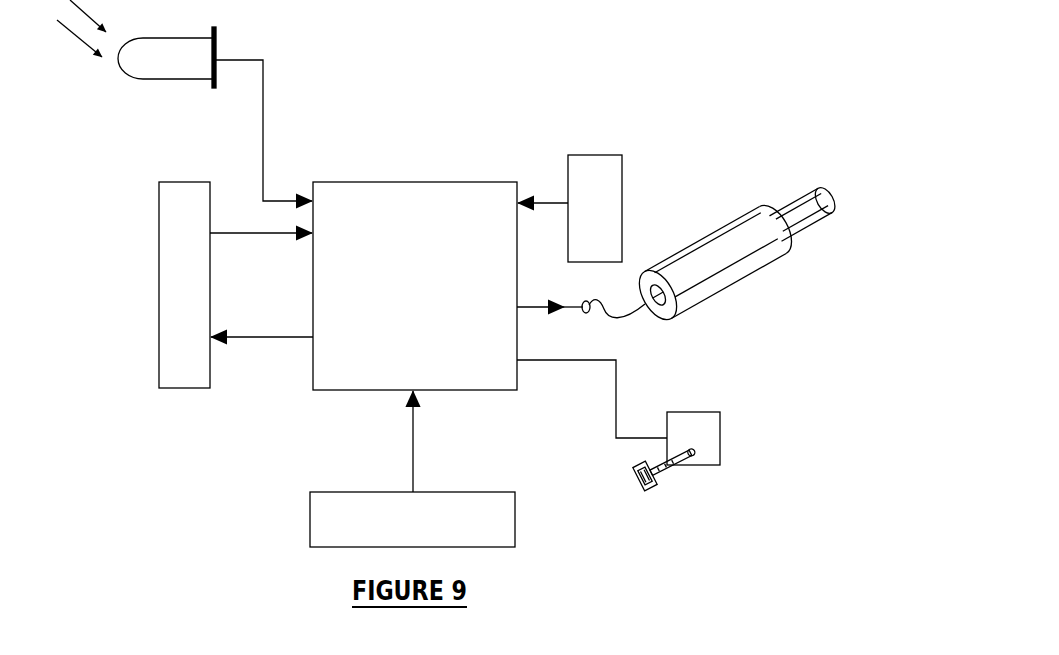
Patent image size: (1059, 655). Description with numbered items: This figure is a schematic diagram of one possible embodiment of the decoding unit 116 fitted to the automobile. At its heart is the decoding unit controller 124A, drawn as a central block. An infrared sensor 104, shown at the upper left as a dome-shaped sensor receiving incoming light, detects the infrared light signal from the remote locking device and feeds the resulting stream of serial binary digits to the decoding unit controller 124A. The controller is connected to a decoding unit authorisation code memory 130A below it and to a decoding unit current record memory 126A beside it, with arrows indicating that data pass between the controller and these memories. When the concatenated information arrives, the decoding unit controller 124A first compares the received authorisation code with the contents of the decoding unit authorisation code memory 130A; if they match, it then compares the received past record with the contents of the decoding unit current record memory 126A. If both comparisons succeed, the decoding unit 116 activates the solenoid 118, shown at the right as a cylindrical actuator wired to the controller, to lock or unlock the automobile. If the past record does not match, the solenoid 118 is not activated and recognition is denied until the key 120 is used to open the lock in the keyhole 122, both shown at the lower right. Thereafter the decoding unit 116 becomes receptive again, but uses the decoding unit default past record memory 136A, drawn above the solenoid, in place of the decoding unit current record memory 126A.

The infrared sensor 104 is at (162, 68).
The decoding unit 116 is at (598, 551).
The solenoid 118 is at (718, 252).
The key 120 is at (653, 485).
The keyhole 122 is at (685, 430).
The decoding unit controller 124A is at (340, 369).
The decoding unit current record memory 126A is at (200, 363).
The decoding unit authorisation code memory 130A is at (437, 510).
The decoding unit default past record memory 136A is at (598, 167).